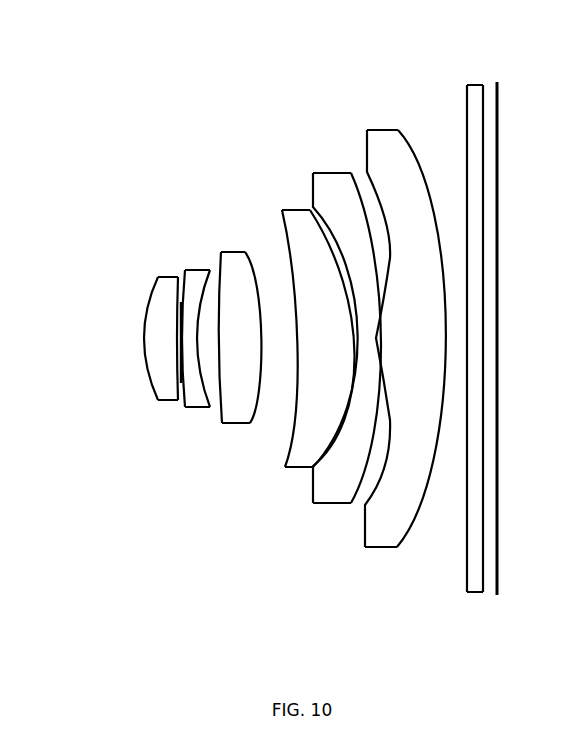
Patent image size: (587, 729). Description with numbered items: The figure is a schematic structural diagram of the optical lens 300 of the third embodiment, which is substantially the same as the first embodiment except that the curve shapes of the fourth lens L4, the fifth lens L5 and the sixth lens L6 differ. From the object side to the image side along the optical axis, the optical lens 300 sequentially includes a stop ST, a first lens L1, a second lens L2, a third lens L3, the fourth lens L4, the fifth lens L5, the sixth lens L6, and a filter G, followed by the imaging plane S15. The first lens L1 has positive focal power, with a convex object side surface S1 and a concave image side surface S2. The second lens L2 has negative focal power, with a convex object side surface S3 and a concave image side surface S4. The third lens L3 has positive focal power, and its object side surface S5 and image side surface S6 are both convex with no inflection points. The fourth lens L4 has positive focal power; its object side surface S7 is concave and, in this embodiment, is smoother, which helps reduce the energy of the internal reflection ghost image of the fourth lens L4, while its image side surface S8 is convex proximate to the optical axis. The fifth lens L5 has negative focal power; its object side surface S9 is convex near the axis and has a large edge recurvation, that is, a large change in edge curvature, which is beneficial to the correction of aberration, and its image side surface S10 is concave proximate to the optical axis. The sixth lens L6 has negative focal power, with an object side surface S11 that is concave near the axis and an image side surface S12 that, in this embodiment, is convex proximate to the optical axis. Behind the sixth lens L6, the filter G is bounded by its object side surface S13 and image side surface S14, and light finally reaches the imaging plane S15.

The optical lens 300 is at (70, 109).
The first lens L1 is at (119, 342).
The second lens L2 is at (150, 375).
The third lens L3 is at (212, 364).
The fourth lens L4 is at (288, 373).
The fifth lens L5 is at (323, 370).
The sixth lens L6 is at (389, 363).
The stop ST is at (158, 276).
The filter G is at (447, 333).
The object side surface of the first lens S1 is at (145, 335).
The image side surface of the first lens S2 is at (178, 378).
The object side surface of the second lens S3 is at (181, 285).
The image side surface of the second lens S4 is at (197, 387).
The object side surface of the third lens S5 is at (220, 268).
The image side surface of the third lens S6 is at (257, 408).
The object side surface of the fourth lens S7 is at (292, 280).
The image side surface of the fourth lens S8 is at (305, 445).
The object side surface of the fifth lens S9 is at (333, 222).
The image side surface of the fifth lens S10 is at (382, 400).
The object side surface of the sixth lens S11 is at (390, 247).
The image side surface of the sixth lens S12 is at (438, 470).
The object side surface of the filter S13 is at (467, 135).
The image side surface of the filter S14 is at (480, 570).
The imaging plane S15 is at (495, 560).